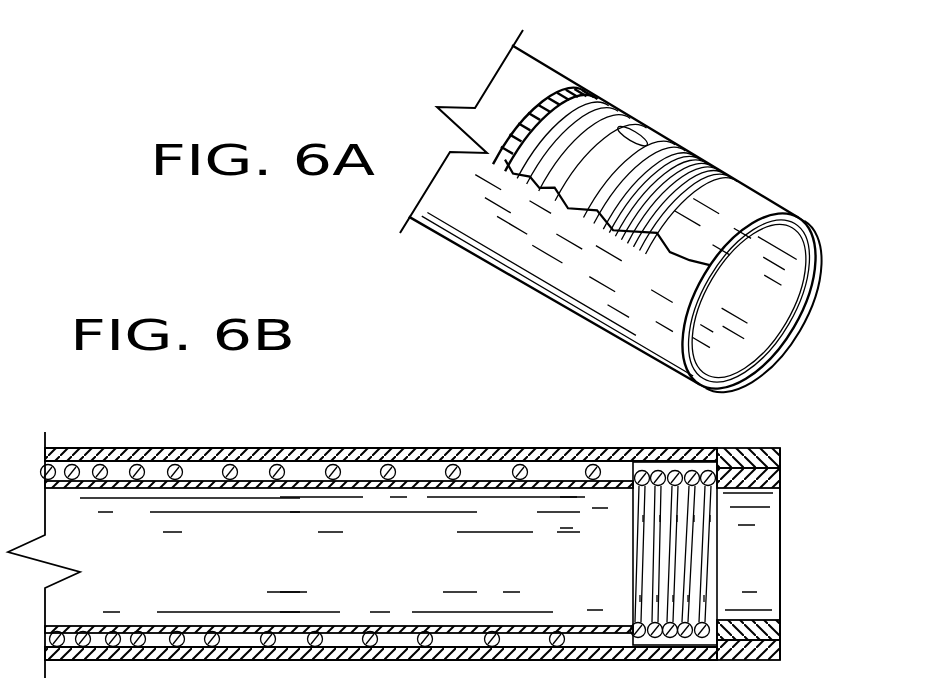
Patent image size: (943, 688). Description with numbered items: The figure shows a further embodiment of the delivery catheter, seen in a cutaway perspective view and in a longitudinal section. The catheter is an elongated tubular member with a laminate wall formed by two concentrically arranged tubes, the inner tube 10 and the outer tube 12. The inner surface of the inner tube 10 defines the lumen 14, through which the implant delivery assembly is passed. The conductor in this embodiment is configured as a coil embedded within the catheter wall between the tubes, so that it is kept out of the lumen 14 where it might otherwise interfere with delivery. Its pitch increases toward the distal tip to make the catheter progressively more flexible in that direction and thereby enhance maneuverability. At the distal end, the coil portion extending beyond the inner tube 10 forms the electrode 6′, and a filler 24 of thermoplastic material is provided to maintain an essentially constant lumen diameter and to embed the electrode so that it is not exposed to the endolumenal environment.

In FIG. 6A, the electrode 6′ is at (732, 188).
In FIG. 6B, the electrode 6′ is at (685, 470).
In FIG. 6B, the inner tube 10 is at (260, 480).
In FIG. 6A, the outer tube 12 is at (452, 202).
In FIG. 6B, the outer tube 12 is at (115, 450).
In FIG. 6A, the lumen 14 is at (762, 312).
In FIG. 6B, the lumen 14 is at (408, 571).
In FIG. 6A, the filler 24 is at (747, 210).
In FIG. 6B, the filler 24 is at (740, 620).